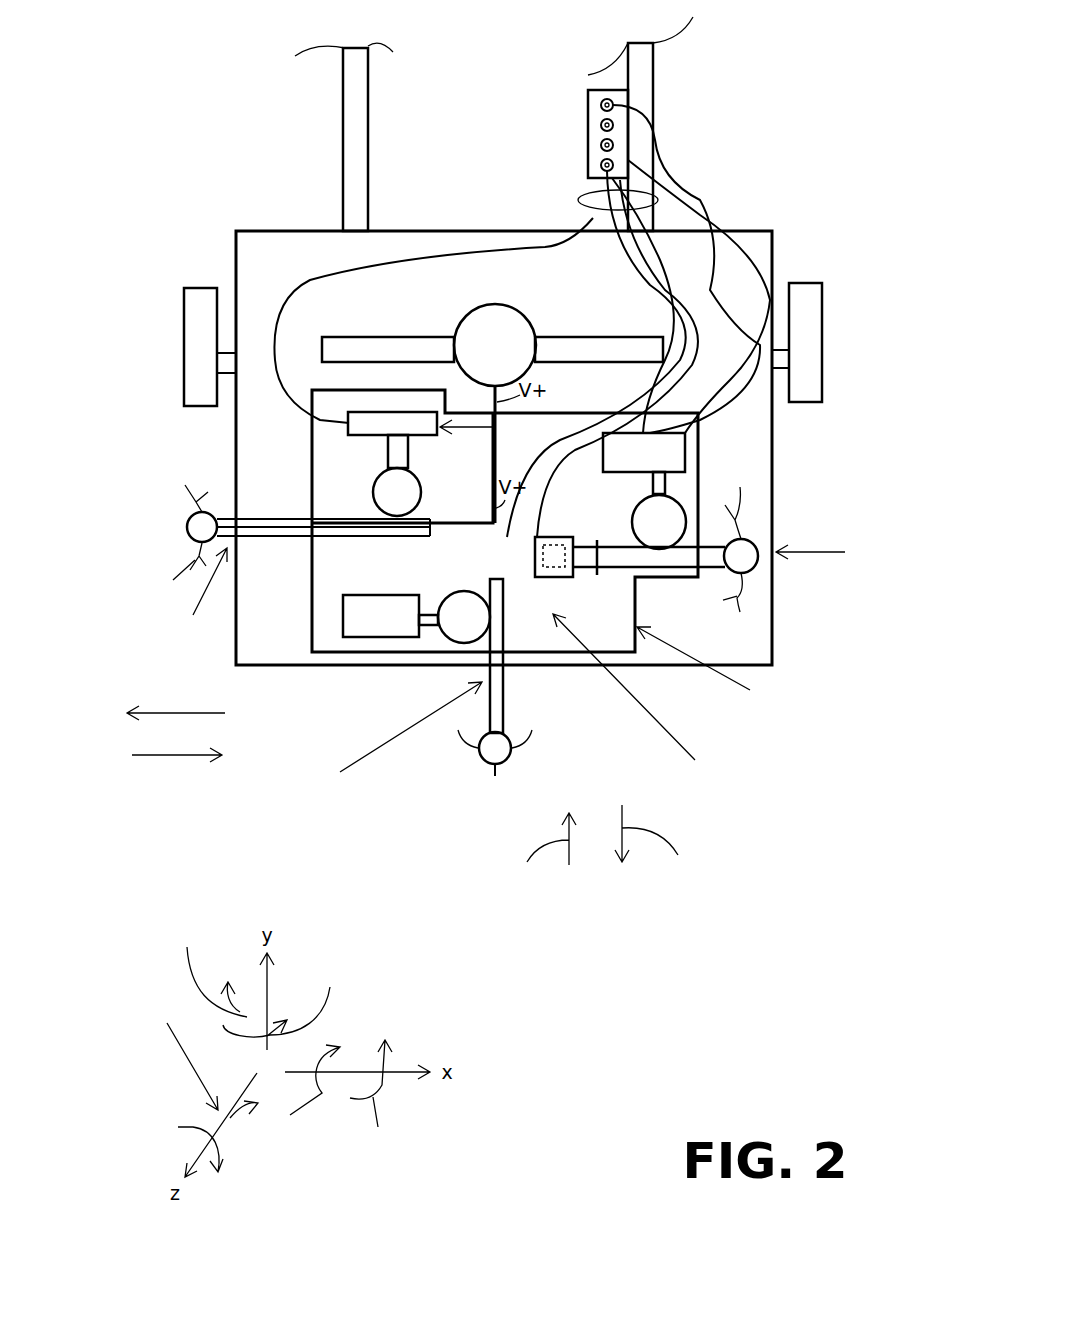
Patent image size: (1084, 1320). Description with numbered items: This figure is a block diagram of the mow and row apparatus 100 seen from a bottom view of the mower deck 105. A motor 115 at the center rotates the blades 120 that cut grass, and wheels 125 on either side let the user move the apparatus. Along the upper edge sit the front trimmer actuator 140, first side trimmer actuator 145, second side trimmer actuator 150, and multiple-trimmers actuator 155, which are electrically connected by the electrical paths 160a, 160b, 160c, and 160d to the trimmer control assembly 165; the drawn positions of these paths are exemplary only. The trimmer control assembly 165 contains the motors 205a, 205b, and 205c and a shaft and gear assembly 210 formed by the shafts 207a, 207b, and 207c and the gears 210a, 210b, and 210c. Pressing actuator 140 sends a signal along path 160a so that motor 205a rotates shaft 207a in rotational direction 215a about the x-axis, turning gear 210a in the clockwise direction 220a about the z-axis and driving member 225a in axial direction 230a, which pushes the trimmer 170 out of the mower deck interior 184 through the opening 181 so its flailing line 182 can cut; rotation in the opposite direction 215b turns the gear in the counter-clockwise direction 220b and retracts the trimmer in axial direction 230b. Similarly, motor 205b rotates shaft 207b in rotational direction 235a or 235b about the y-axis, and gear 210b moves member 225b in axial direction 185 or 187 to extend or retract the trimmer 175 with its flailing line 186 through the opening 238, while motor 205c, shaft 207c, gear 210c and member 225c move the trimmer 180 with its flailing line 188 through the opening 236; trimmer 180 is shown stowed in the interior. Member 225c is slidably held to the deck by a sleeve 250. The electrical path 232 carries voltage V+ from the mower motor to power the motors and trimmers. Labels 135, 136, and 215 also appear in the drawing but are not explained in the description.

The mow and row apparatus 100 is at (385, 856).
The mower deck 105 is at (773, 628).
The motor 115 is at (507, 305).
The blades 120 is at (383, 335).
The wheels 125 is at (193, 315).
The masts 135 is at (343, 135).
The sensor panel 136 is at (608, 134).
The front trimmer actuator 140 is at (600, 102).
The first side trimmer actuator 145 is at (600, 124).
The second side trimmer actuator 150 is at (600, 146).
The multiple-trimmers actuator 155 is at (600, 165).
The electrical path 160a is at (660, 143).
The electrical path 160b is at (700, 222).
The electrical path 160c is at (718, 178).
The electrical path 160d is at (580, 200).
The trimmer control assembly 165 is at (721, 680).
The trimmer 170 is at (495, 772).
The trimmer 175 is at (190, 525).
The trimmer 180 is at (747, 547).
The opening 181 is at (387, 739).
The flailing line 182 is at (459, 743).
The mower deck interior 184 is at (645, 705).
The axial direction 185 is at (160, 713).
The flailing line 186 is at (174, 532).
The axial direction 187 is at (177, 755).
The flailing line 188 is at (735, 545).
The motor 205a is at (368, 593).
The motor 205b is at (390, 437).
The motor 205c is at (615, 474).
The shaft 207a is at (428, 612).
The shaft 207b is at (415, 457).
The shaft 207c is at (647, 488).
The shaft and gear assembly 210 is at (328, 502).
The gear 210a is at (458, 625).
The gear 210b is at (405, 489).
The gear 210c is at (650, 517).
The wire 215 is at (316, 444).
The rotational direction 215a is at (285, 1097).
The rotational direction 215b is at (388, 1097).
The clockwise direction 220a is at (190, 1127).
The counter-clockwise direction 220b is at (171, 1055).
The member 225a is at (503, 700).
The member 225b is at (277, 540).
The member 225c is at (648, 575).
The axial direction 230a is at (664, 844).
The axial direction 230b is at (528, 856).
The electrical path 232 is at (495, 428).
The rotational direction 235a is at (200, 967).
The rotational direction 235b is at (314, 994).
The opening 236 is at (833, 557).
The opening 238 is at (195, 597).
The sleeve 250 is at (549, 578).